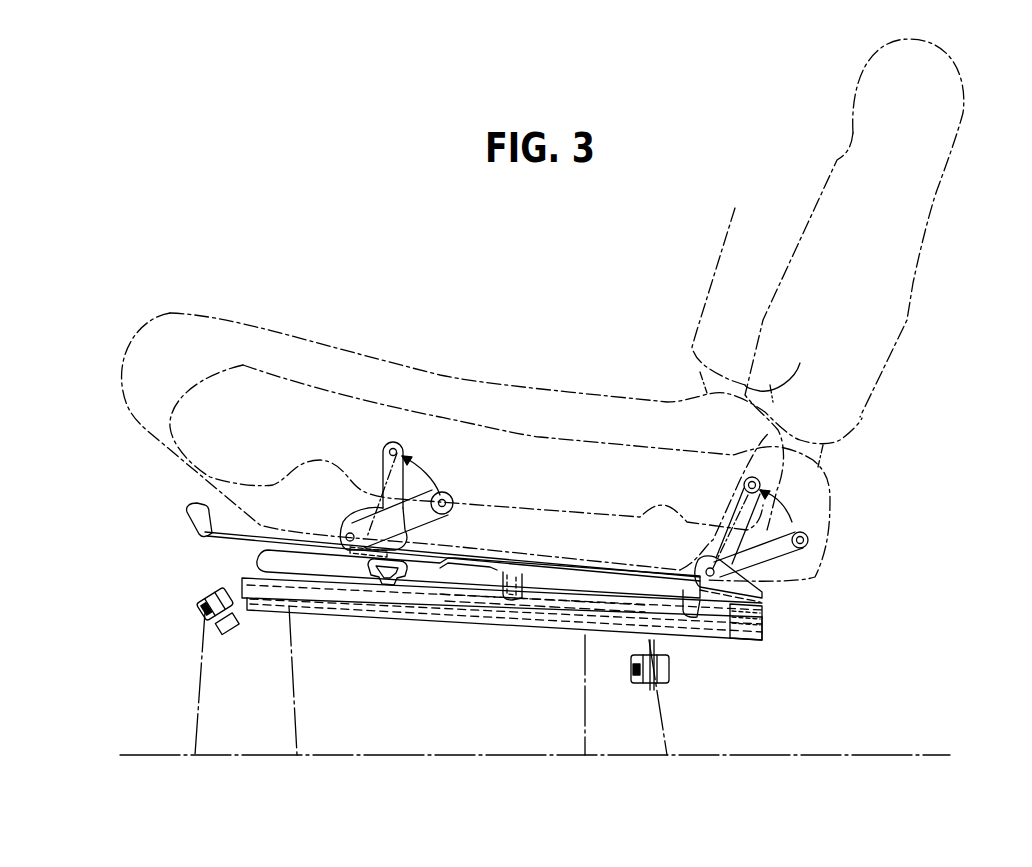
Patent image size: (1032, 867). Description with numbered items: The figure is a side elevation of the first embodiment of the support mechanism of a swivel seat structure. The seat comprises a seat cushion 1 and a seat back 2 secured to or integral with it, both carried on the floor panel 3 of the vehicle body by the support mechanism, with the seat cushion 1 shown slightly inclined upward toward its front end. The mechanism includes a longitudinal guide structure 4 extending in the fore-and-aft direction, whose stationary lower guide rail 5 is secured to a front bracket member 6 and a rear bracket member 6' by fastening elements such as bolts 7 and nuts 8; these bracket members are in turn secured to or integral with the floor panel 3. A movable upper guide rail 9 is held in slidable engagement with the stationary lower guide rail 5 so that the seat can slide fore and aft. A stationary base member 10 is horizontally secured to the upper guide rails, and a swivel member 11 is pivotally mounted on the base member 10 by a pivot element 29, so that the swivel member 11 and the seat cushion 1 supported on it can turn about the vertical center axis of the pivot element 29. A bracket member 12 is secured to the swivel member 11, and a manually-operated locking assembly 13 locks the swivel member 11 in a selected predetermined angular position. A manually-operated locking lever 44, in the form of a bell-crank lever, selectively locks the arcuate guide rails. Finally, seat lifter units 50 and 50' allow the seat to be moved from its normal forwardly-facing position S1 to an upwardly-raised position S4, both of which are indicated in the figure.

The seat cushion 1 is at (543, 433).
The seat back 2 is at (807, 218).
The floor panel 3 is at (793, 753).
The longitudinal guide structure 4 is at (732, 648).
The stationary lower guide rail 5 is at (242, 580).
The front bracket member 6 is at (268, 680).
The rear bracket member 6' is at (649, 695).
The bolt 7 is at (205, 606).
The nut 8 is at (210, 628).
The movable upper guide rail 9 is at (760, 637).
The stationary base member 10 is at (503, 592).
The swivel member 11 is at (540, 604).
The bracket member 12 is at (450, 571).
The manually-operated locking assembly 13 is at (410, 585).
The pivot element 29 is at (762, 600).
The manually-operated locking lever 44 is at (223, 544).
The seat lifter unit 50 is at (419, 499).
The seat lifter unit 50' is at (799, 527).
The normal forwardly-facing position S1 is at (348, 386).
The upwardly-raised position S4 is at (243, 325).